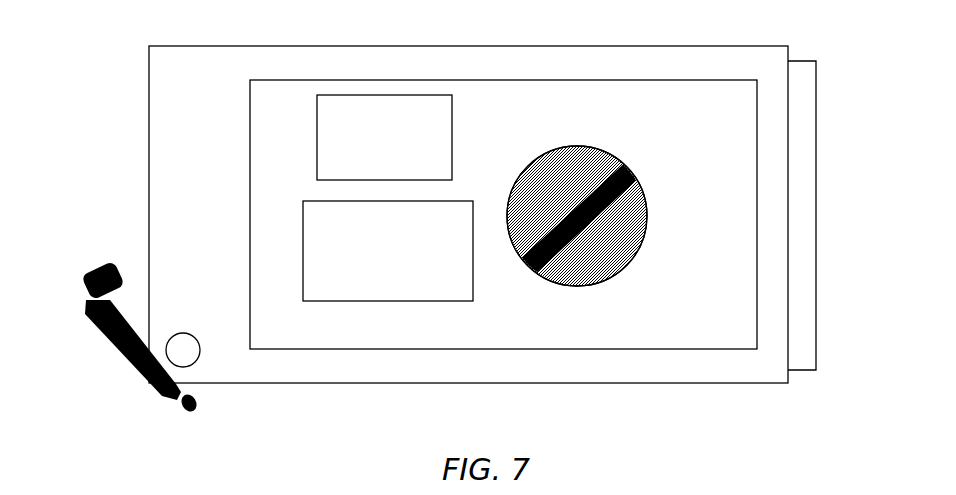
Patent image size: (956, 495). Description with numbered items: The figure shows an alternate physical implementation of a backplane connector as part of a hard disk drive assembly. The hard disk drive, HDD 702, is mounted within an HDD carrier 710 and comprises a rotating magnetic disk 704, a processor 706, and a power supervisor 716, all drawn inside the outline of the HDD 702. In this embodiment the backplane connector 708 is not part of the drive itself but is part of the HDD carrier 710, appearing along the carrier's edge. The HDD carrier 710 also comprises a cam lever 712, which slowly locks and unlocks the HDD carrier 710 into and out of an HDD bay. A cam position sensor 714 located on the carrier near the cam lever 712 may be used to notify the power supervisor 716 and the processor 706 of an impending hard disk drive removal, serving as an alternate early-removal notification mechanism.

The HDD carrier 710 is at (149, 55).
The HDD 702 is at (250, 107).
The processor 706 is at (452, 107).
The power supervisor 716 is at (473, 285).
The rotating magnetic disk 704 is at (641, 181).
The backplane connector 708 is at (807, 61).
The cam position sensor 714 is at (187, 333).
The cam lever 712 is at (86, 285).